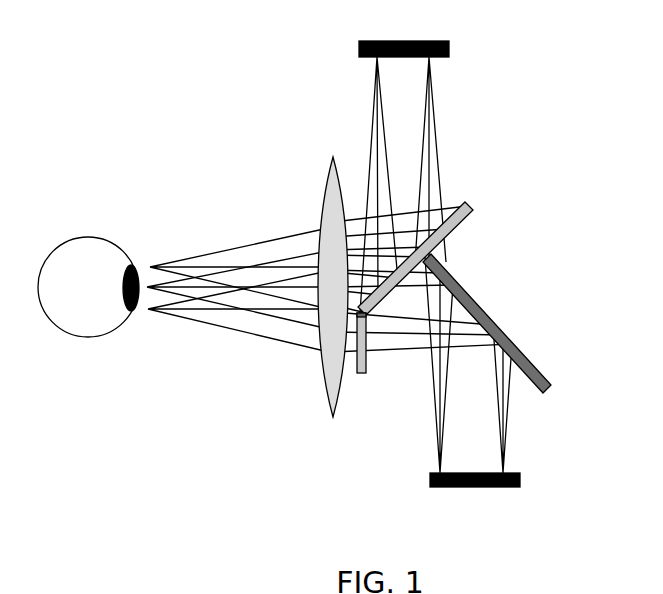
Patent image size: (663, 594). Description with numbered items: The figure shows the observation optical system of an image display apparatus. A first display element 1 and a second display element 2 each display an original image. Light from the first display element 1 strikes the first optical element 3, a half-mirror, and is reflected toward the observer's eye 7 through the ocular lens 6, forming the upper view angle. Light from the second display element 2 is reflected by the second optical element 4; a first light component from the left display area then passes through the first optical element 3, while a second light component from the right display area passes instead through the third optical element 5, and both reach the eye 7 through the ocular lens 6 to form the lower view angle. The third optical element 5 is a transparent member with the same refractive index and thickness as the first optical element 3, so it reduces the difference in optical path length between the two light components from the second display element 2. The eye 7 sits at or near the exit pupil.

The first display element 1 is at (359, 46).
The second display element 2 is at (430, 481).
The first optical element 3 is at (472, 214).
The second optical element 4 is at (516, 340).
The third optical element 5 is at (366, 352).
The ocular lens 6 is at (326, 205).
The observer's eye 7 is at (85, 325).